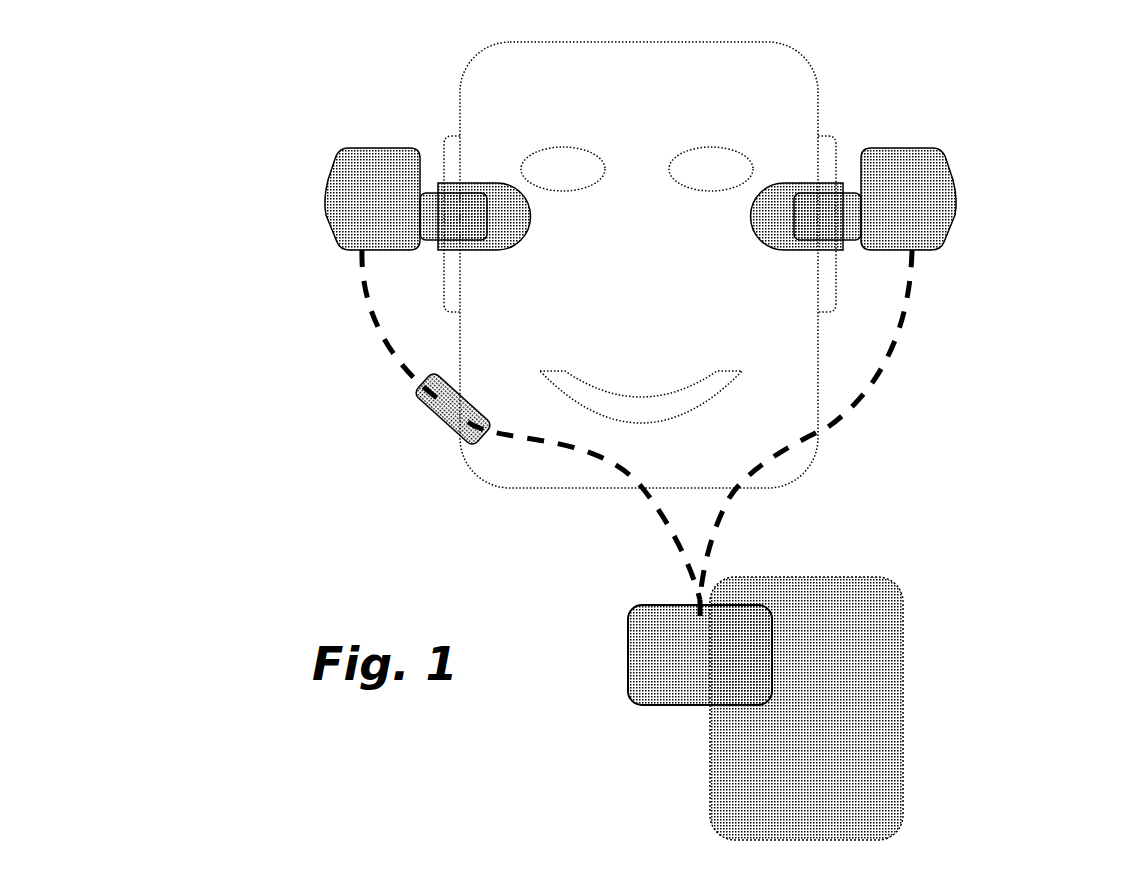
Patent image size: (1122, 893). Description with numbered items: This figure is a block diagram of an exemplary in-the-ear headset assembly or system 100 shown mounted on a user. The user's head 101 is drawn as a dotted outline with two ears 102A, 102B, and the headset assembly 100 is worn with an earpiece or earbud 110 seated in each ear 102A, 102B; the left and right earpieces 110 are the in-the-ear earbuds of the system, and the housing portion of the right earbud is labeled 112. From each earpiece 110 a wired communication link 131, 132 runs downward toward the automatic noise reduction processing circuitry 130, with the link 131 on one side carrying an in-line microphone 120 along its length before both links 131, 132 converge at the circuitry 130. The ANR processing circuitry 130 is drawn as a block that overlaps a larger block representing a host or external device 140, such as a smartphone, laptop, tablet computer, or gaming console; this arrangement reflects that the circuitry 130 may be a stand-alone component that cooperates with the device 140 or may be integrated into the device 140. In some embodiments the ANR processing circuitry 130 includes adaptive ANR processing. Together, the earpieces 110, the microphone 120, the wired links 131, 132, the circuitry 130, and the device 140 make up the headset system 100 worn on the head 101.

The in-the-ear headset assembly 100 is at (188, 84).
The user's head 101 is at (797, 55).
The ear 102A is at (458, 133).
The ear 102B is at (822, 130).
The ITE earpiece 110 is at (363, 144).
The earbud housing 112 is at (955, 210).
The in-line microphone 120 is at (420, 408).
The ANR processing circuitry 130 is at (628, 606).
The wired communication link 131 is at (650, 498).
The wired communication link 132 is at (880, 378).
The host device 140 is at (903, 627).